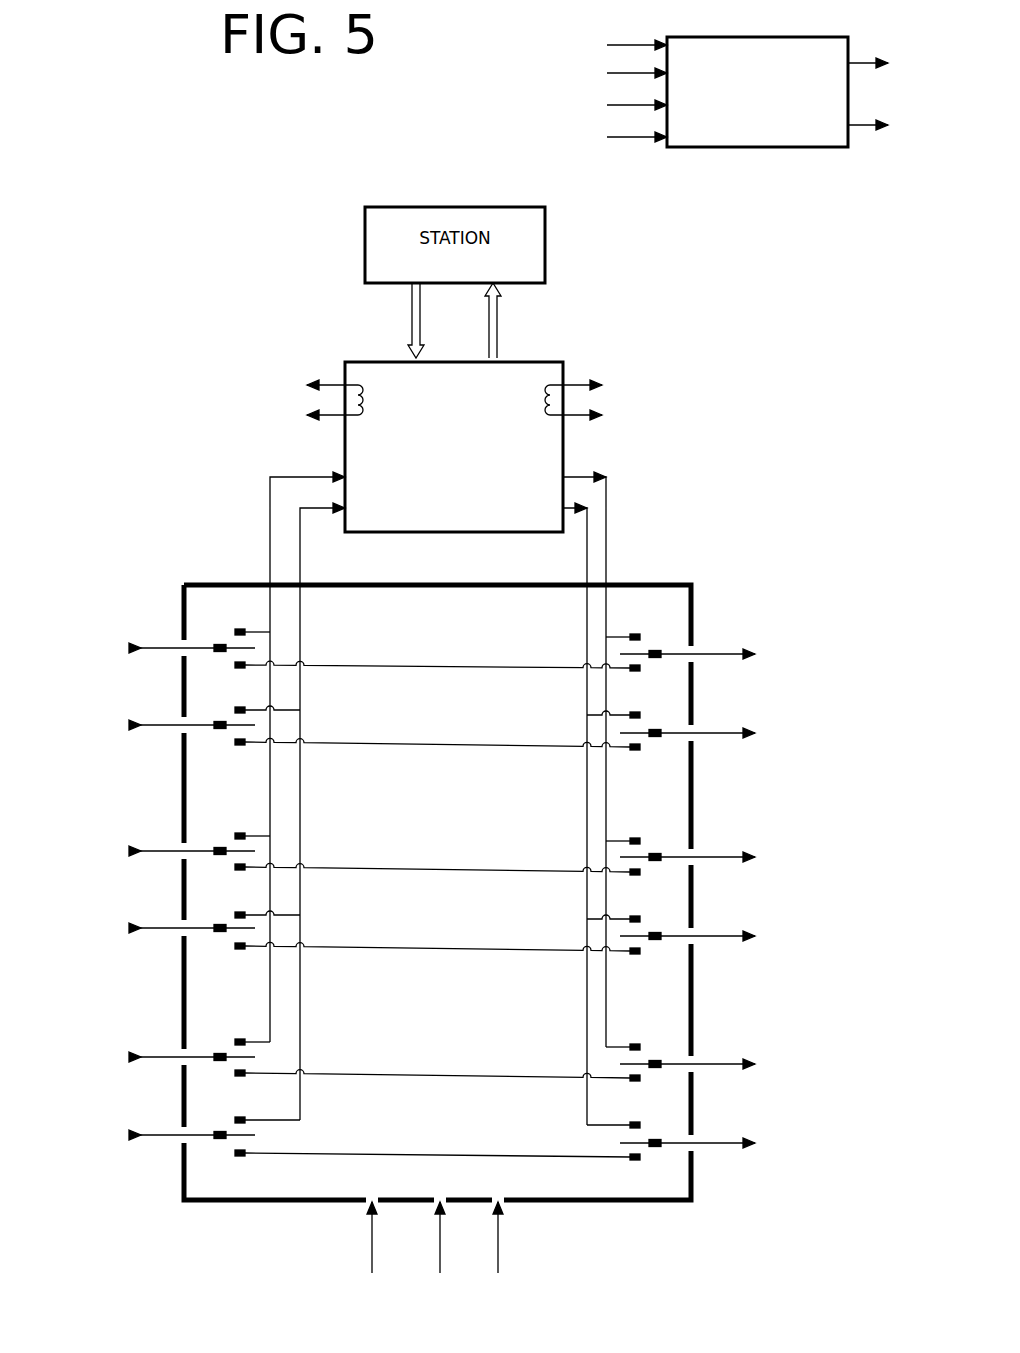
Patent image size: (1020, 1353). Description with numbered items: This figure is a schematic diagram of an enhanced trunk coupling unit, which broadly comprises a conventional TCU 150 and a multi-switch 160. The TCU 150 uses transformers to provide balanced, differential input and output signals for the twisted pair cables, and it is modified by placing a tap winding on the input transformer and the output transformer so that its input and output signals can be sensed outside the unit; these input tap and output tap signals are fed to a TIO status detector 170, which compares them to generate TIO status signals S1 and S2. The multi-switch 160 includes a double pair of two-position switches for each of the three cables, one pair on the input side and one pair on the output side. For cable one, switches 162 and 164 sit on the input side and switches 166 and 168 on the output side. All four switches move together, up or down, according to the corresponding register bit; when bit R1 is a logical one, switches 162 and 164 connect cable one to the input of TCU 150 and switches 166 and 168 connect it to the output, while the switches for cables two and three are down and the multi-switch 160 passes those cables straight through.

The TIO status detector 170 is at (709, 95).
The TCU 150 is at (460, 447).
The multi-switch 160 is at (435, 951).
The switch 162 is at (226, 632).
The switch 164 is at (220, 714).
The switch 166 is at (646, 637).
The switch 168 is at (646, 715).